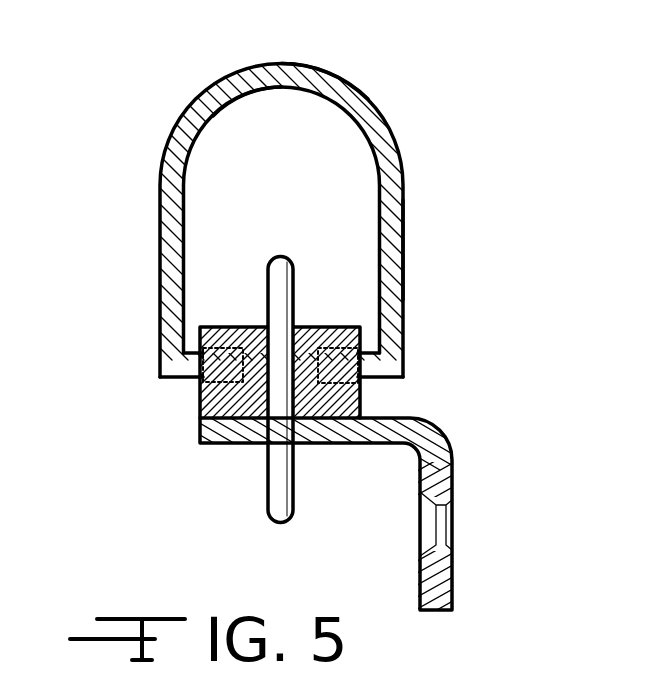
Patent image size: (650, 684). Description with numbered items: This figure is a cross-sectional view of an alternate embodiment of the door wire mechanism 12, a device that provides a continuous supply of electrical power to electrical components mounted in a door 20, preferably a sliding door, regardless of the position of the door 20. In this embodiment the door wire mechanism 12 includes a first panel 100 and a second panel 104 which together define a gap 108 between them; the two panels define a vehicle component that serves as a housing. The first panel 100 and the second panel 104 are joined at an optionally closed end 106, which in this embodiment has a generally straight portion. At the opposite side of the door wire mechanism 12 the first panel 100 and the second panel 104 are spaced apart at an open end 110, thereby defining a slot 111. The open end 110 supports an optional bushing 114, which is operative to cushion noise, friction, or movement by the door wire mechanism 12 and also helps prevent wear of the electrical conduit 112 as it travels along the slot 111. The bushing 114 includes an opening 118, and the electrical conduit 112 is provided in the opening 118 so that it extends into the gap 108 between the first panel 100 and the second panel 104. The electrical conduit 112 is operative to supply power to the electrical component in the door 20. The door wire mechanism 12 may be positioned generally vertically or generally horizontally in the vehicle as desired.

The door wire mechanism 12 is at (418, 84).
The door 20 is at (462, 466).
The first panel 100 is at (160, 212).
The second panel 104 is at (403, 228).
The closed end 106 is at (328, 72).
The gap 108 is at (243, 118).
The open end 110 is at (403, 361).
The slot 111 is at (243, 358).
The electrical conduit 112 is at (258, 293).
The bushing 114 is at (322, 327).
The opening 118 is at (296, 327).